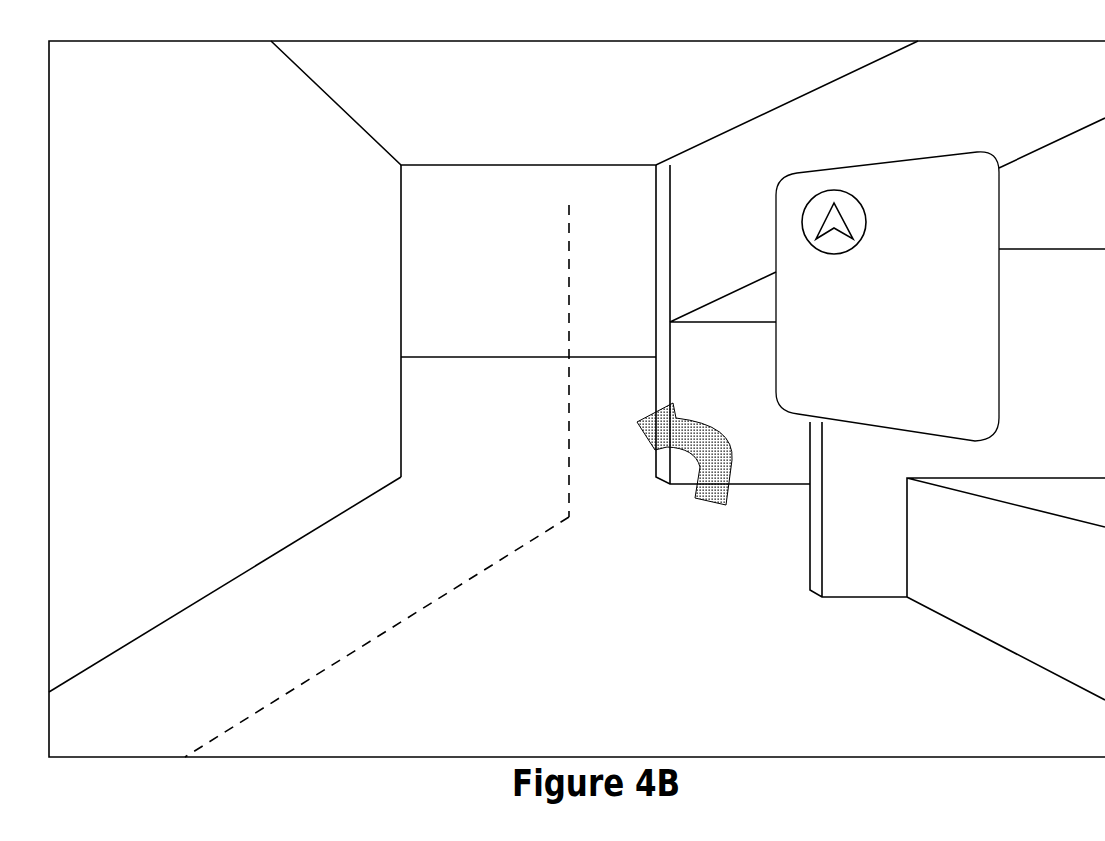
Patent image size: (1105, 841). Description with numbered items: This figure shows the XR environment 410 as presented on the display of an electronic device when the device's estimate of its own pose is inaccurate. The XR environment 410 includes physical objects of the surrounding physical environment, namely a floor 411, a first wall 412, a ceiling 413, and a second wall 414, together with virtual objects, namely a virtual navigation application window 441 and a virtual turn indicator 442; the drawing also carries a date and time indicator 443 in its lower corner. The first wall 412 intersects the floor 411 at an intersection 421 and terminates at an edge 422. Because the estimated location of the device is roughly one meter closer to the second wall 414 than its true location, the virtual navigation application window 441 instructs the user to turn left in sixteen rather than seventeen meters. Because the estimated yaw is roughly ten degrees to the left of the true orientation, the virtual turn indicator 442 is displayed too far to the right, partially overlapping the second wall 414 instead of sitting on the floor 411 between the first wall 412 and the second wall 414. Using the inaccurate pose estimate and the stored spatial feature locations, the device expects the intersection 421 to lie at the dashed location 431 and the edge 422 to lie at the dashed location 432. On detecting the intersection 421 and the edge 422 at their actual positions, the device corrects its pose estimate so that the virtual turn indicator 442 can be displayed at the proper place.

The XR environment 410 is at (113, 96).
The floor 411 is at (915, 698).
The first wall 412 is at (225, 428).
The ceiling 413 is at (432, 90).
The second wall 414 is at (726, 372).
The intersection 421 is at (306, 530).
The edge 422 is at (400, 417).
The location 431 is at (465, 582).
The location 432 is at (569, 448).
The virtual navigation application window 441 is at (868, 166).
The virtual turn indicator 442 is at (693, 418).
The date and time indicator 443 is at (120, 676).